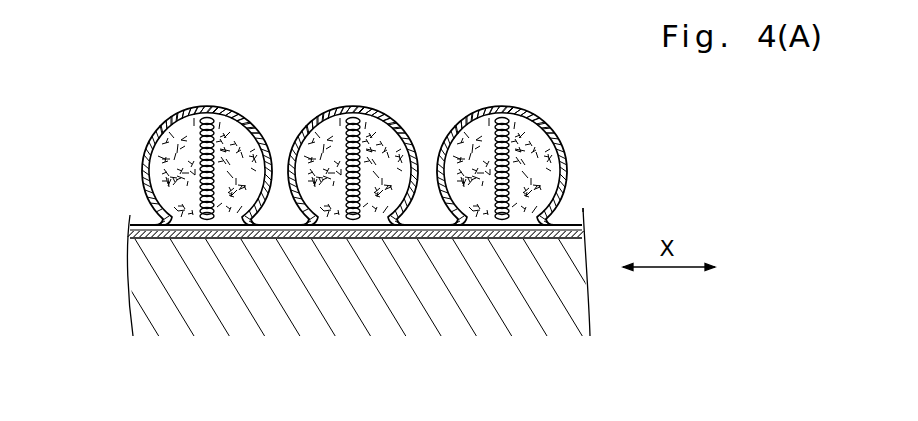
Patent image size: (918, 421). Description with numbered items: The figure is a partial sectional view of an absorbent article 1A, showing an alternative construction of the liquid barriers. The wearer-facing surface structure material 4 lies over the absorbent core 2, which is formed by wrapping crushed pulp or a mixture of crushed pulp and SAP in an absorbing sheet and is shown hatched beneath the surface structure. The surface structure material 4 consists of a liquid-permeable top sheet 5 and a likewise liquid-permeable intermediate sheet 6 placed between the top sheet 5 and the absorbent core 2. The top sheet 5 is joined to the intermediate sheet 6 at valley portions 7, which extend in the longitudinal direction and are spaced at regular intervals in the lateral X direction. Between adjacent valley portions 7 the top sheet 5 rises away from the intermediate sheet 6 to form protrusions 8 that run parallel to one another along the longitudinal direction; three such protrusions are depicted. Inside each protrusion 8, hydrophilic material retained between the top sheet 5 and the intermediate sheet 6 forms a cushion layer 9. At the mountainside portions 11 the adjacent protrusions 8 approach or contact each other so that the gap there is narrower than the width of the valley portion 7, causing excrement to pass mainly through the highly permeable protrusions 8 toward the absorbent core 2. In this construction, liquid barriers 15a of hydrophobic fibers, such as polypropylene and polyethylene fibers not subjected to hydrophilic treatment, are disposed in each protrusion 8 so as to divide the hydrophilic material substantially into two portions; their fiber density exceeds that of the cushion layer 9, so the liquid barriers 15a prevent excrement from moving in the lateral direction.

The laminated structure 1A is at (561, 98).
The absorbent core 2 is at (177, 306).
The surface structure material 4 is at (97, 110).
The top sheet 5 is at (172, 120).
The intermediate sheet 6 is at (287, 242).
The valley portion 7 is at (427, 238).
The protrusion 8 is at (411, 130).
The cushion layer 9 is at (242, 121).
The mountainside portion 11 is at (278, 154).
The liquid barrier 15a is at (213, 127).